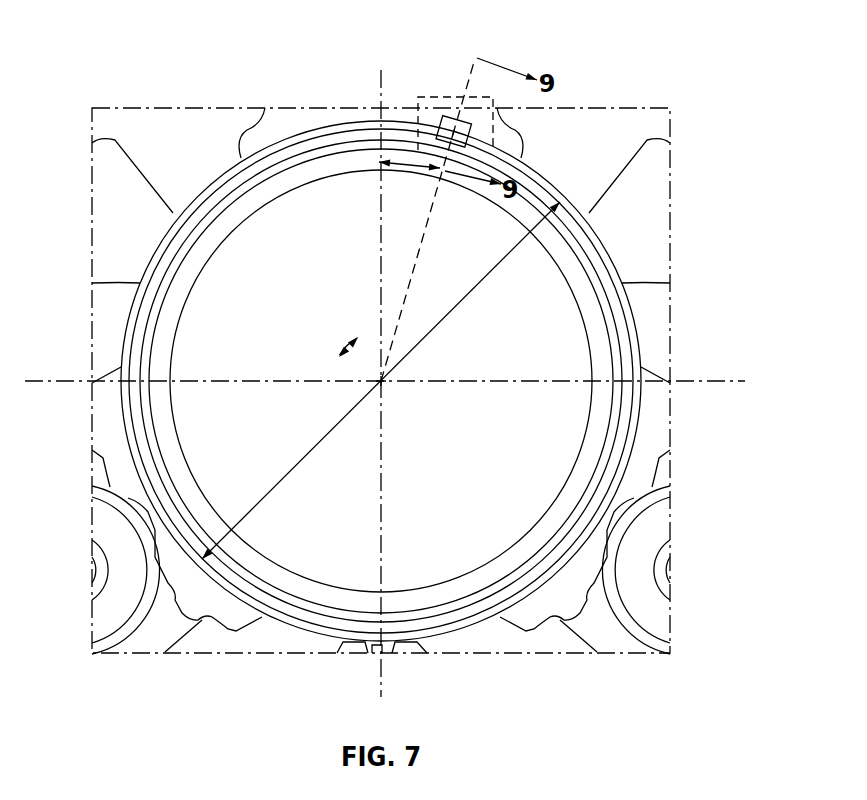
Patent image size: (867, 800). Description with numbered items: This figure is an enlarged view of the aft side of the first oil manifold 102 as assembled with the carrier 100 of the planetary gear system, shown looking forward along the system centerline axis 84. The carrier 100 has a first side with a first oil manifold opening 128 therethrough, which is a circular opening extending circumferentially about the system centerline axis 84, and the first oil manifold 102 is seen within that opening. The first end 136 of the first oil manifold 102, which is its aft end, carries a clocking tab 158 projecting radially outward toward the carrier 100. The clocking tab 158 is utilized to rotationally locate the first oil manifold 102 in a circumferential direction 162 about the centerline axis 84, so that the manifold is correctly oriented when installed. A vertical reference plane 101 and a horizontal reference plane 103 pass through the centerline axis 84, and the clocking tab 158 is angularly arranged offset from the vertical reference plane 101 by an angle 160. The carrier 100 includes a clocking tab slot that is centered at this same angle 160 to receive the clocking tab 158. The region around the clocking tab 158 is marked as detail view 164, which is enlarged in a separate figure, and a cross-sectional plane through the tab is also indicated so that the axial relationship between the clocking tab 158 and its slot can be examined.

The carrier 100 is at (636, 158).
The first oil manifold 102 is at (608, 271).
The first end 136 is at (606, 335).
The angle 160 is at (405, 165).
The horizontal center plane 103 is at (718, 381).
The vertical reference plane 101 is at (382, 677).
The system centerline axis 84 is at (390, 390).
The first oil manifold opening 128 is at (298, 467).
The circumferential direction 162 is at (360, 335).
The clocking tab 158 is at (453, 100).
The detail view 164 is at (457, 108).